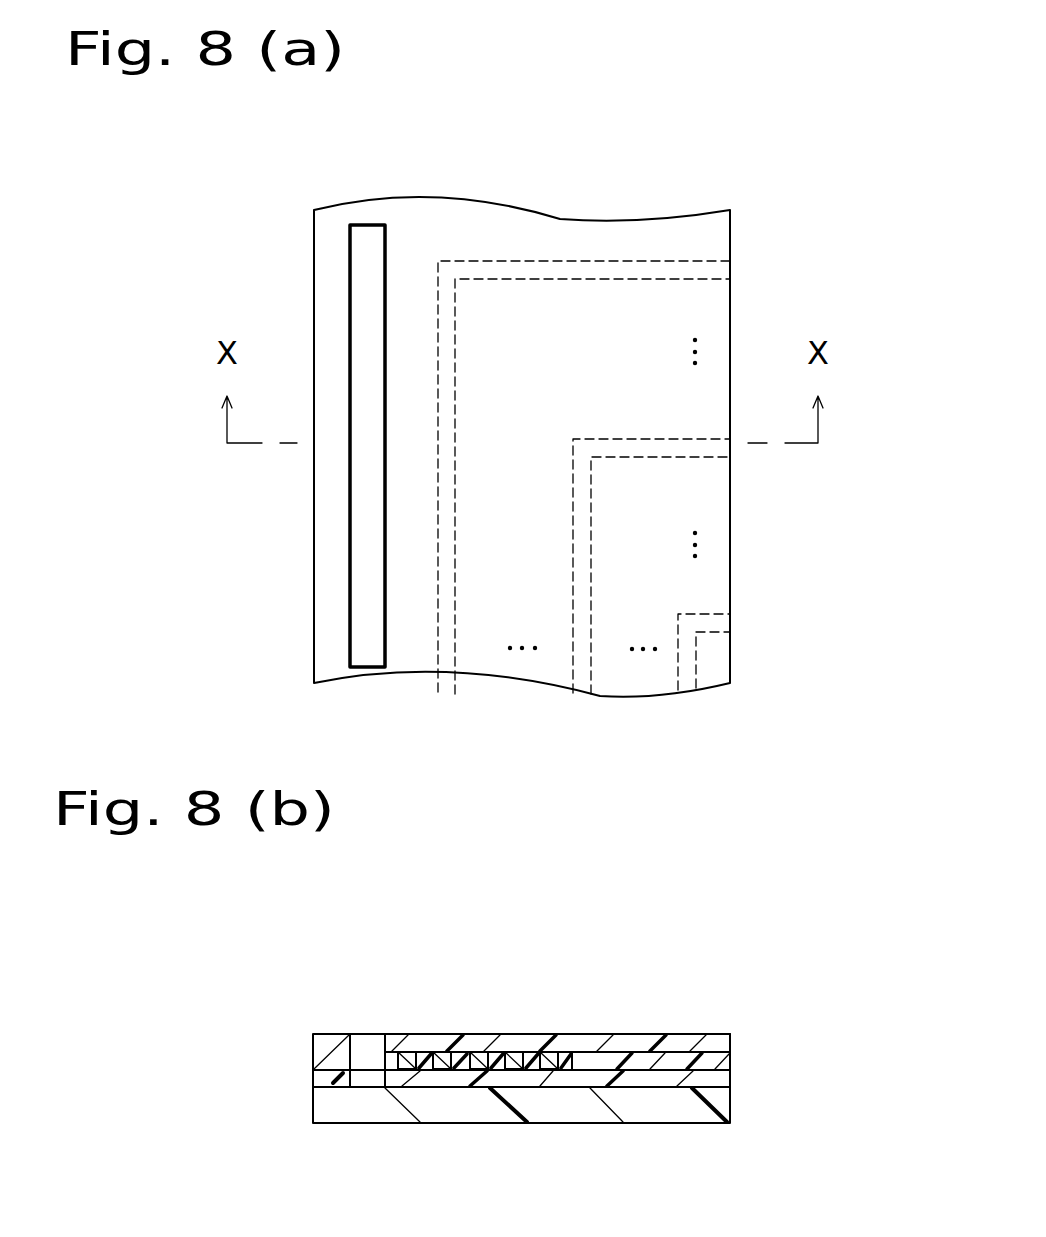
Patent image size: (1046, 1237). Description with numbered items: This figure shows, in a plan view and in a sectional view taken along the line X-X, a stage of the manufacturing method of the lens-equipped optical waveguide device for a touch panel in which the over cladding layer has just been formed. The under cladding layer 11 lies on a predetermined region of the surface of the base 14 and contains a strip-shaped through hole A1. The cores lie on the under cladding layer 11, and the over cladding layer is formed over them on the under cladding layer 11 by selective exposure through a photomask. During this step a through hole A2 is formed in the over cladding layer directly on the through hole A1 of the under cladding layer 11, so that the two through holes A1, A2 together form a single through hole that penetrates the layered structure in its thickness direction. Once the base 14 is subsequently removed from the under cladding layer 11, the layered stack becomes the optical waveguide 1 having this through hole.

The through hole A1 is at (348, 1082).
The through hole A2 is at (372, 1055).
The optical waveguide 1 is at (655, 956).
The under cladding layer 11 is at (427, 1078).
The base 14 is at (723, 1100).